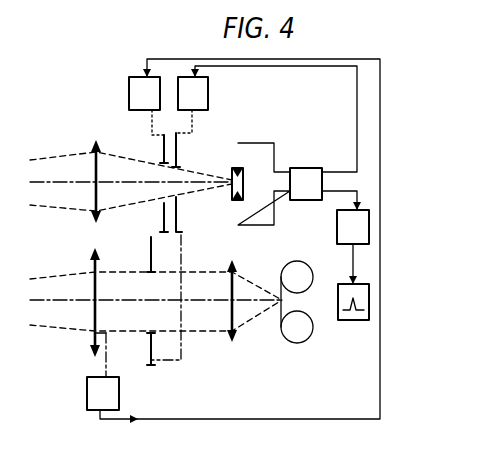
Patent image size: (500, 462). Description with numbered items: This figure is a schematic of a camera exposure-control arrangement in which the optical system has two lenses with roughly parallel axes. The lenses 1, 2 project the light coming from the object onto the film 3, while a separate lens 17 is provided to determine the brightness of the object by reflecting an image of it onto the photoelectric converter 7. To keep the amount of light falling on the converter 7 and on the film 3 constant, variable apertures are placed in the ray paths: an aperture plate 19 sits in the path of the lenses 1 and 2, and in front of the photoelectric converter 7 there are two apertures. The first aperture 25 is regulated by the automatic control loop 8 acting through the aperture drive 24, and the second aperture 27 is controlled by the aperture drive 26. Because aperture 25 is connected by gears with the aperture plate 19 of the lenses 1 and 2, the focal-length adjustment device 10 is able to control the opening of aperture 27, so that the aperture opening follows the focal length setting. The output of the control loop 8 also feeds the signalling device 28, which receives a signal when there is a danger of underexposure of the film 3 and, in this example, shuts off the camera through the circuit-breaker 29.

The lens 1 is at (93, 333).
The lens 2 is at (230, 323).
The film 3 is at (281, 318).
The photoelectric converter 7 is at (232, 176).
The automatic control loop 8 is at (306, 184).
The focal-length adjustment device 10 is at (103, 371).
The lens 17 is at (94, 160).
The aperture plate 19 is at (151, 256).
The aperture drive 24 is at (192, 105).
The aperture 25 is at (176, 218).
The aperture drive 26 is at (146, 106).
The aperture 27 is at (164, 220).
The signalling device 28 is at (353, 227).
The circuit-breaker 29 is at (352, 320).